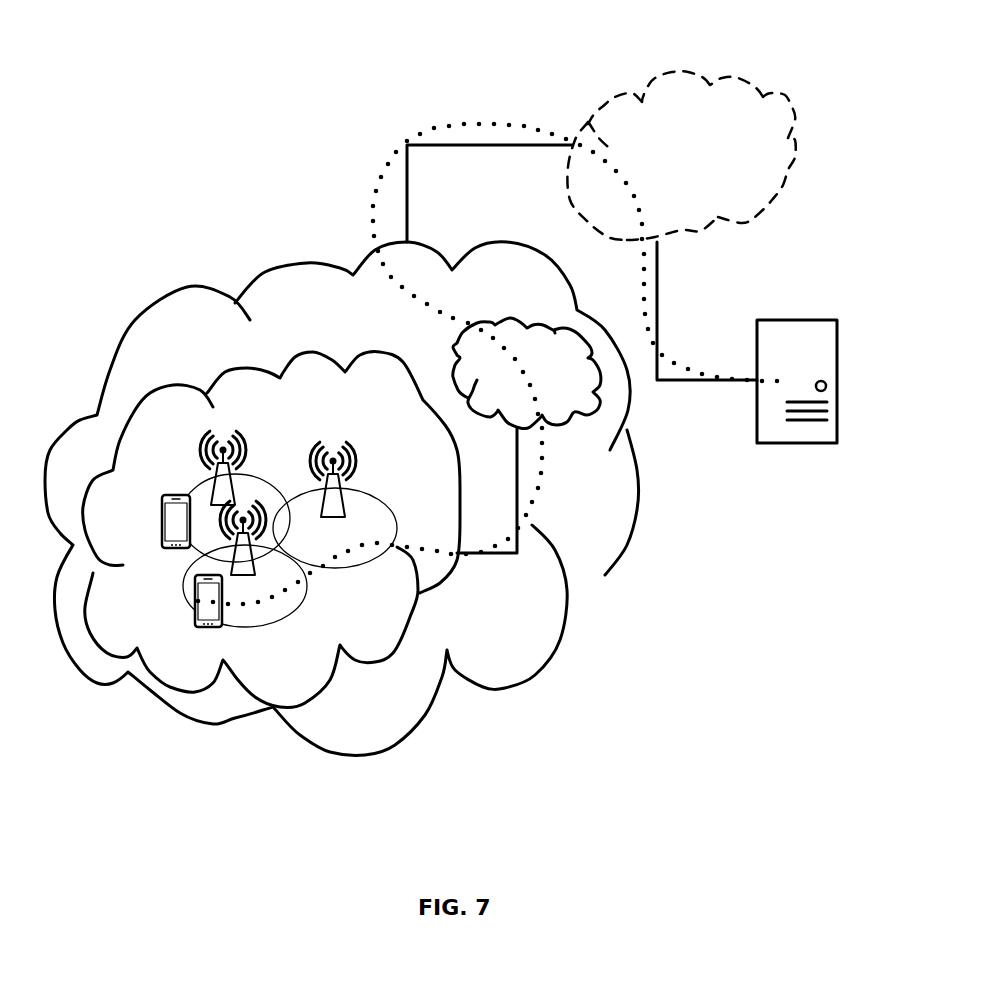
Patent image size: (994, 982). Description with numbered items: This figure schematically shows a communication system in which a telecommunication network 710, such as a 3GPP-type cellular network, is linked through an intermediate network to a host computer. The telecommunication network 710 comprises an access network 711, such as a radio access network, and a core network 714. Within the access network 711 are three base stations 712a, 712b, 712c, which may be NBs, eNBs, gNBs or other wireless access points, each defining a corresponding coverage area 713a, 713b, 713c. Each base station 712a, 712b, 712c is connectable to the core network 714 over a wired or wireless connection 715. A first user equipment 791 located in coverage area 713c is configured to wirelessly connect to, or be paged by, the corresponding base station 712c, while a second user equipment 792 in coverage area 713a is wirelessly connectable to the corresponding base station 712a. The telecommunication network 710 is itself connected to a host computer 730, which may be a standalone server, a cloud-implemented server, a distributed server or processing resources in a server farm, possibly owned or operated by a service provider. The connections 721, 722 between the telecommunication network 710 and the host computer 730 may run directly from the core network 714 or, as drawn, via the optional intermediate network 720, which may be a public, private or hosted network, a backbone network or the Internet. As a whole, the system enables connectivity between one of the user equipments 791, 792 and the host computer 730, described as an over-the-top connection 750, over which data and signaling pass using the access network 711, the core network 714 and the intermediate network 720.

The telecommunication network 710 is at (358, 309).
The access network 711 is at (315, 409).
The base station 712a is at (250, 570).
The base station 712b is at (350, 463).
The base station 712c is at (205, 455).
The coverage area 713a is at (305, 577).
The coverage area 713b is at (397, 527).
The coverage area 713c is at (183, 497).
The core network 714 is at (593, 385).
The wired or wireless connection 715 is at (518, 472).
The intermediate network 720 is at (698, 167).
The connection 721 is at (485, 145).
The connection 722 is at (712, 382).
The host computer 730 is at (797, 397).
The over-the-top (OTT) connection 750 is at (385, 165).
The first user equipment (UE) 791 is at (165, 548).
The second UE 792 is at (197, 623).